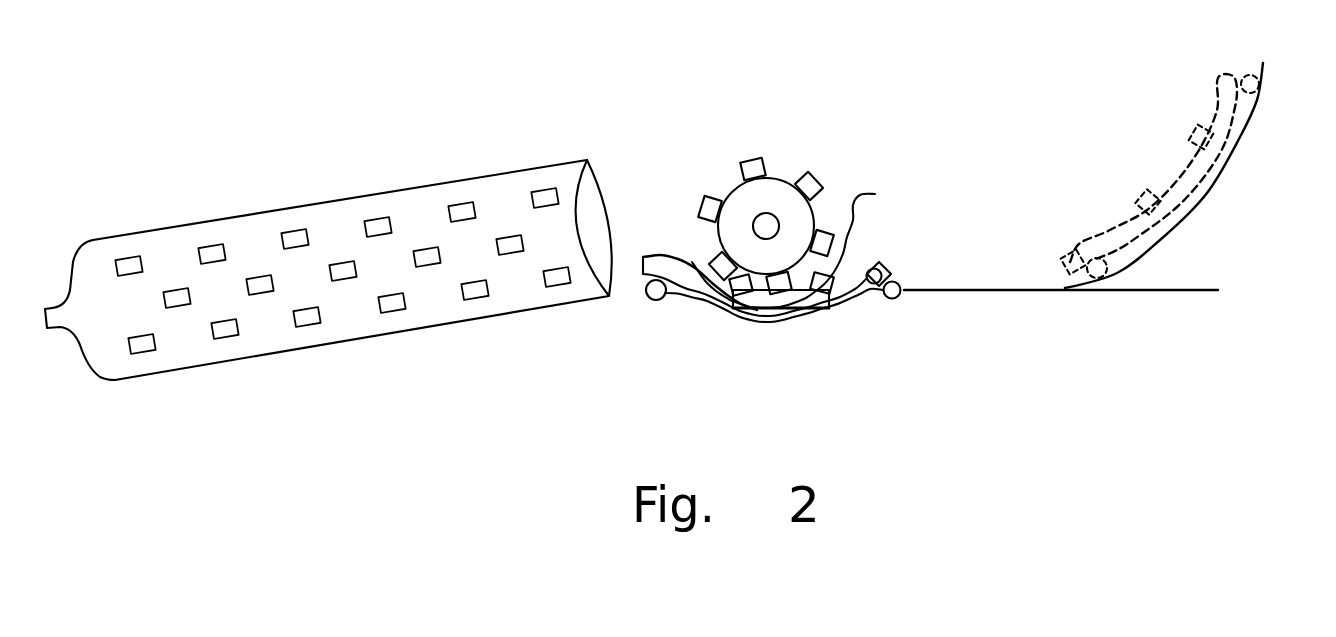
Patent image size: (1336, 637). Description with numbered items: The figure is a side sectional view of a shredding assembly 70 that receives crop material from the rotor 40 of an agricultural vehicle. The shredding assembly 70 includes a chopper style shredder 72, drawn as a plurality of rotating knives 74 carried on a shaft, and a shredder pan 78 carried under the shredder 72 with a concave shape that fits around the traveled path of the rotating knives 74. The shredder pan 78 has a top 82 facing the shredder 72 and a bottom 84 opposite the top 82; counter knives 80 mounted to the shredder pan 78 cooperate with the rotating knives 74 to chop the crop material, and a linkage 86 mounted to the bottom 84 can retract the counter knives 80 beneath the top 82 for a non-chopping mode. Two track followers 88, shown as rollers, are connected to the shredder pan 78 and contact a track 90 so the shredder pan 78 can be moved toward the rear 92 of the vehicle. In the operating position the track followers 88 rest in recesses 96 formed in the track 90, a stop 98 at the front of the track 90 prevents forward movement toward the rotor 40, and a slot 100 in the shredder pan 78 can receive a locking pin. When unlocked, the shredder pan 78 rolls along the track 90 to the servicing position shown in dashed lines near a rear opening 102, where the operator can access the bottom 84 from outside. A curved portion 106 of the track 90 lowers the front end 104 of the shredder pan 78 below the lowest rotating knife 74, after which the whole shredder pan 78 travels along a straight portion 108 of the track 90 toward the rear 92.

The rotor 40 is at (278, 209).
The shredding assembly 70 is at (868, 108).
The shredder 72 is at (784, 164).
The rotating knives 74 is at (721, 262).
The shredder pan 78 is at (884, 273).
The counter knives 80 is at (1193, 133).
The top 82 is at (878, 262).
The bottom 84 is at (866, 314).
The linkage 86 is at (800, 310).
The track followers 88 is at (647, 302).
The track 90 is at (903, 298).
The rear 92 is at (1187, 292).
The recesses 96 is at (654, 300).
The stop 98 is at (641, 266).
The slot 100 is at (885, 312).
The rear opening 102 is at (1238, 228).
The front end 104 is at (651, 258).
The curved portion 106 is at (693, 312).
The straight portion 108 is at (1000, 290).